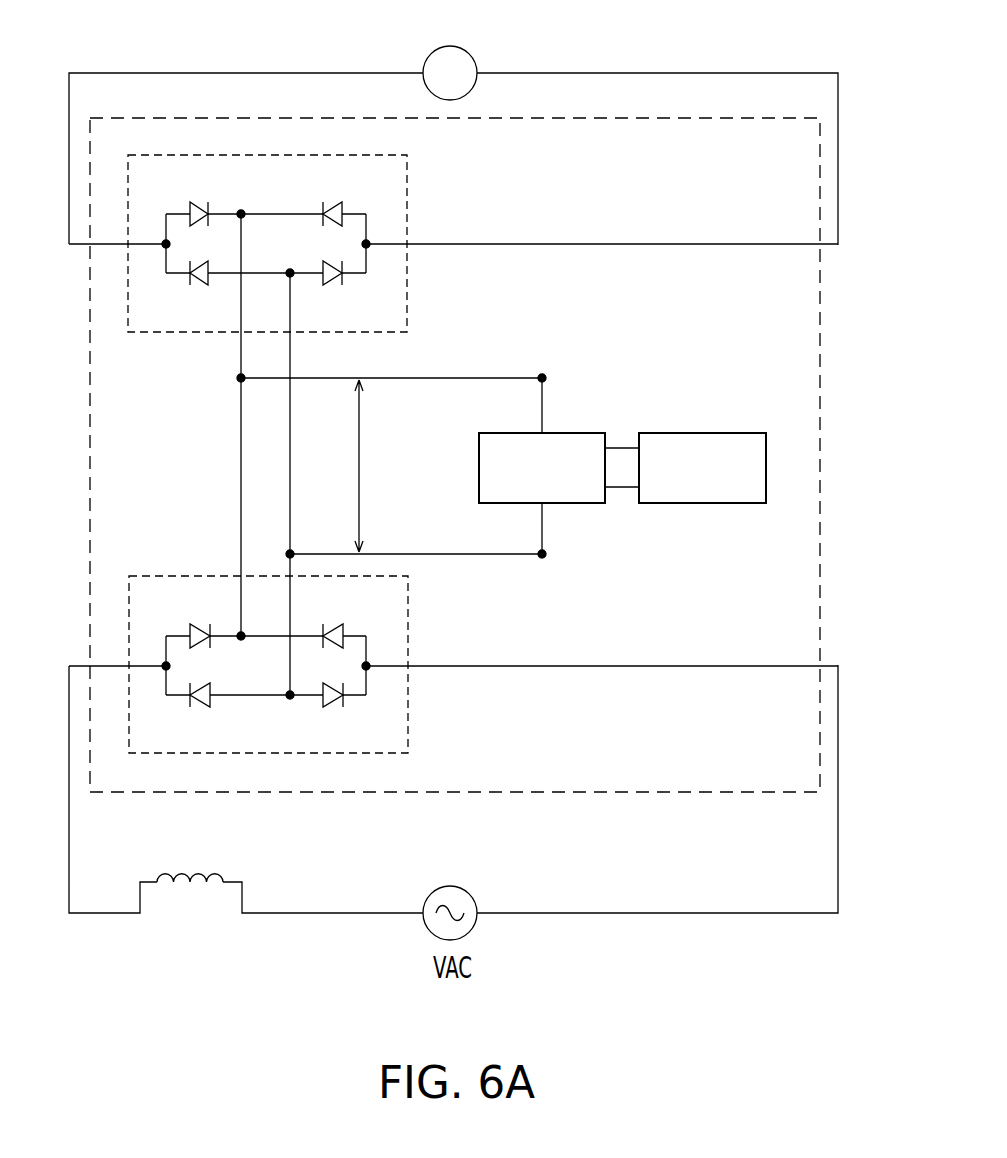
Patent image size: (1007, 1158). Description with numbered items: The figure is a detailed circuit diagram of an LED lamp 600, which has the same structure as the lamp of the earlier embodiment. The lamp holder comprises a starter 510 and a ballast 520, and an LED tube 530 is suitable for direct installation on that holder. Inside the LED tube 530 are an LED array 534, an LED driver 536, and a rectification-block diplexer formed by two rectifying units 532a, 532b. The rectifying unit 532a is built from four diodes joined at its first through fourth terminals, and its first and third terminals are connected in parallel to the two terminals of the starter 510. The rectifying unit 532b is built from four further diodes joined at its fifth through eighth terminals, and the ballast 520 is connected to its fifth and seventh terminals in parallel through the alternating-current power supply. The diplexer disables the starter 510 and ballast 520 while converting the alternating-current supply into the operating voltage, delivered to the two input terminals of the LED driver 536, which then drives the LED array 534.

The starter 510 is at (452, 47).
The ballast 520 is at (223, 878).
The LED tube 530 is at (820, 387).
The rectifying unit 532a is at (407, 268).
The rectifying unit 532b is at (408, 620).
The LED array 534 is at (722, 432).
The LED driver 536 is at (560, 432).
The LED lamp 600 is at (800, 1004).